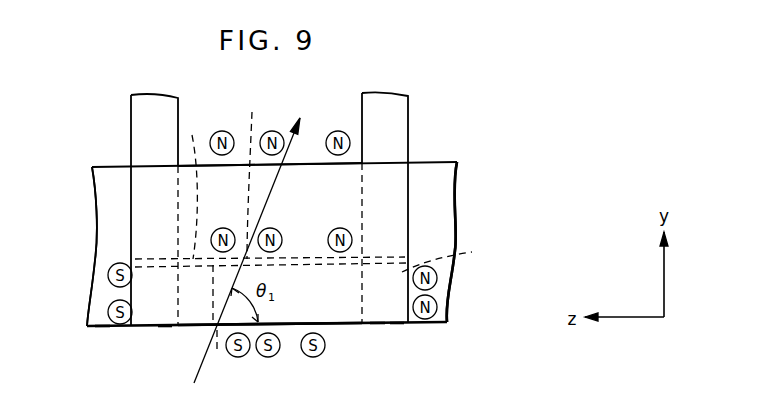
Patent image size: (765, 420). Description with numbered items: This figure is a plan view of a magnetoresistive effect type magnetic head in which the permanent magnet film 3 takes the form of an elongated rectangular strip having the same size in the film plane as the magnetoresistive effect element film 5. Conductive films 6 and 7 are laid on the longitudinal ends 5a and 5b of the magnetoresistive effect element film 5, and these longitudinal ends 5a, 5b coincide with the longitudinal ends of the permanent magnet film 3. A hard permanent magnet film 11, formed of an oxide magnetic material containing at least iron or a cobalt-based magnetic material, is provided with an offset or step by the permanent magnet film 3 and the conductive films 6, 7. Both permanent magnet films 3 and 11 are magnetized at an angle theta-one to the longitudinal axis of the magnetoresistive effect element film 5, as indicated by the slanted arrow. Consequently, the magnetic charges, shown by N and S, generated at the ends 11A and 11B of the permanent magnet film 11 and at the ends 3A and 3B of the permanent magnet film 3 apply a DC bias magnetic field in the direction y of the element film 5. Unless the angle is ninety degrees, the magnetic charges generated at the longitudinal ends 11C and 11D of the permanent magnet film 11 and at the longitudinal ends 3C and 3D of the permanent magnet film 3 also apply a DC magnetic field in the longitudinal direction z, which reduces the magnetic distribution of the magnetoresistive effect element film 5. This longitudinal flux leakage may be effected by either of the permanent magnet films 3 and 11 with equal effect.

The permanent magnet film 3 is at (193, 187).
The end of permanent magnet film 3A is at (250, 175).
The end of permanent magnet film 3B is at (377, 324).
The longitudinal end of permanent magnet film 3C is at (102, 330).
The longitudinal end of permanent magnet film 3D is at (453, 260).
The magnetoresistive effect element film 5 is at (247, 250).
The longitudinal end of magnetoresistive effect element film 5a is at (165, 330).
The longitudinal end of magnetoresistive effect element film 5b is at (397, 324).
The conductive film 6 is at (131, 127).
The conductive film 7 is at (403, 102).
The hard permanent magnet film 11 is at (388, 170).
The end of permanent magnet film 11A is at (308, 163).
The end of permanent magnet film 11B is at (293, 325).
The longitudinal end of permanent magnet film 11C is at (133, 228).
The longitudinal end of permanent magnet film 11D is at (410, 208).